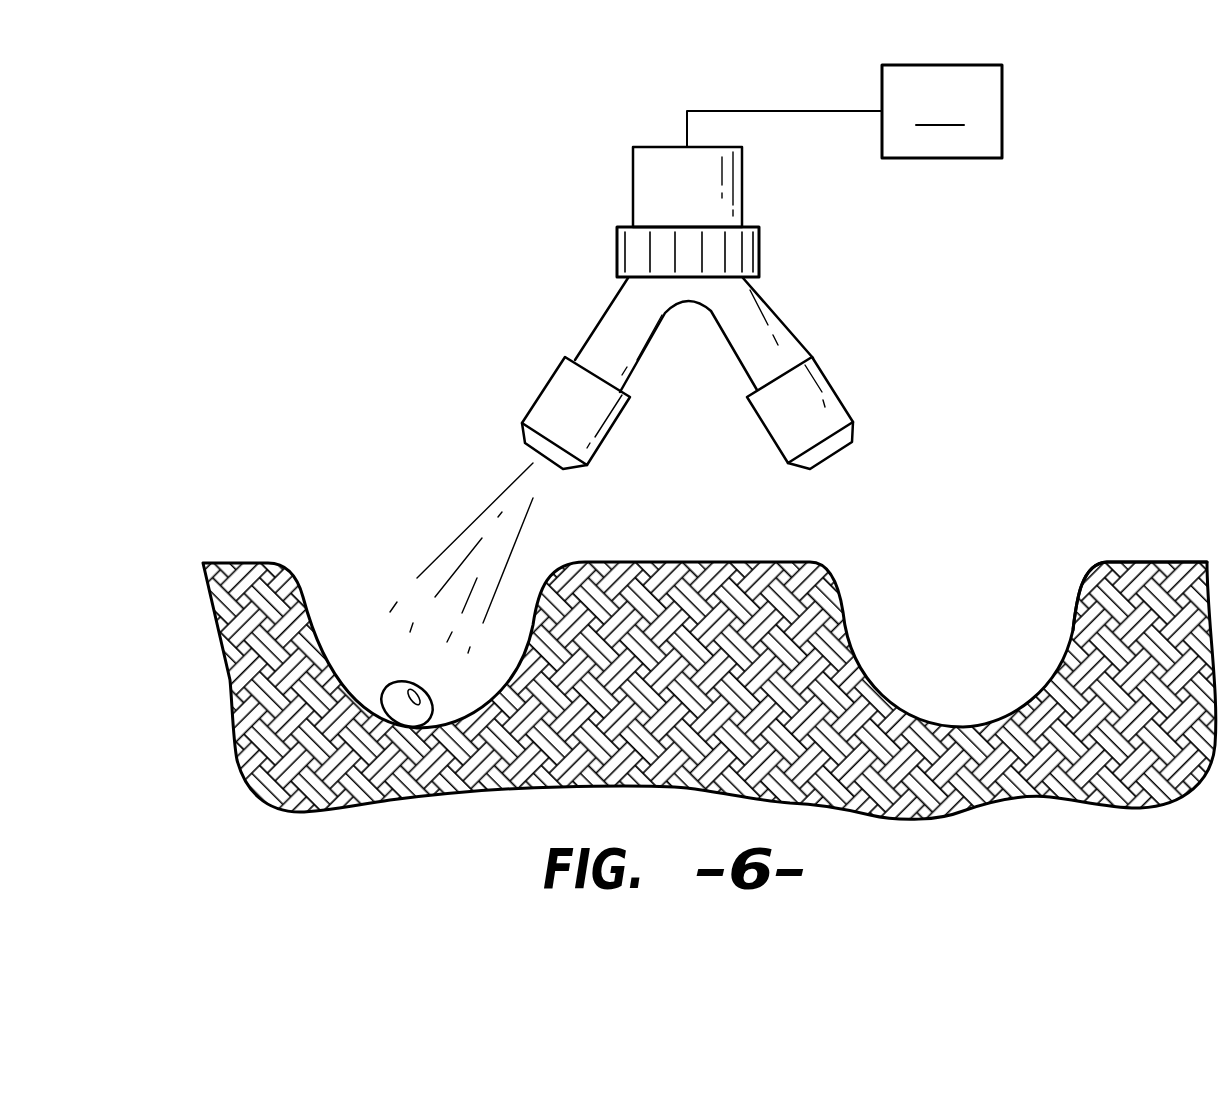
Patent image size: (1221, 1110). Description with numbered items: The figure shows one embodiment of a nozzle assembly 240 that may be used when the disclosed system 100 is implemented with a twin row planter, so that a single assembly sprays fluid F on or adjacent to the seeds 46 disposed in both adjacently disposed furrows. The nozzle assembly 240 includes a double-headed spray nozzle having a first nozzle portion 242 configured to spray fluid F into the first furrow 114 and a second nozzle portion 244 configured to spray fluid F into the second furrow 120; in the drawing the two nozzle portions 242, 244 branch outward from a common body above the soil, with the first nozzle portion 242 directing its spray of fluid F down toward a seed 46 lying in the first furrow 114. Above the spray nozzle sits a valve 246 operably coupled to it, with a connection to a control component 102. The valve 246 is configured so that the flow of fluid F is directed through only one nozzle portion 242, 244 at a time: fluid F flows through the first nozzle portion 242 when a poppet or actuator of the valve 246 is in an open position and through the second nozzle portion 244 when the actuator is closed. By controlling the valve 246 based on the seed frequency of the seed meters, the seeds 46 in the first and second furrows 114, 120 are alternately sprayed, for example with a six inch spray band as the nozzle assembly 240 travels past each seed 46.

The system 100 is at (1084, 285).
The controller 102 is at (844, 111).
The first furrow 114 is at (303, 597).
The second furrow 120 is at (1077, 598).
The seed 46 is at (401, 681).
The nozzle assembly 240 is at (688, 291).
The first nozzle portion 242 is at (535, 395).
The second nozzle portion 244 is at (833, 387).
The valve 246 is at (648, 182).
The fluid F is at (462, 533).